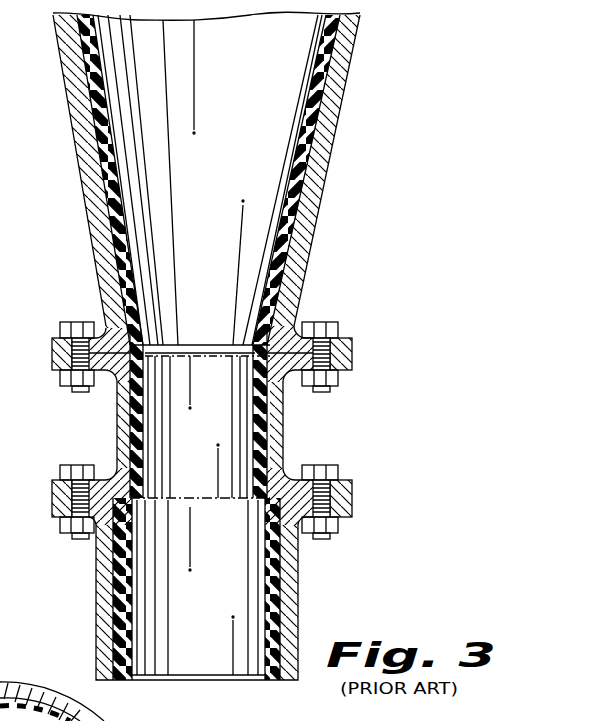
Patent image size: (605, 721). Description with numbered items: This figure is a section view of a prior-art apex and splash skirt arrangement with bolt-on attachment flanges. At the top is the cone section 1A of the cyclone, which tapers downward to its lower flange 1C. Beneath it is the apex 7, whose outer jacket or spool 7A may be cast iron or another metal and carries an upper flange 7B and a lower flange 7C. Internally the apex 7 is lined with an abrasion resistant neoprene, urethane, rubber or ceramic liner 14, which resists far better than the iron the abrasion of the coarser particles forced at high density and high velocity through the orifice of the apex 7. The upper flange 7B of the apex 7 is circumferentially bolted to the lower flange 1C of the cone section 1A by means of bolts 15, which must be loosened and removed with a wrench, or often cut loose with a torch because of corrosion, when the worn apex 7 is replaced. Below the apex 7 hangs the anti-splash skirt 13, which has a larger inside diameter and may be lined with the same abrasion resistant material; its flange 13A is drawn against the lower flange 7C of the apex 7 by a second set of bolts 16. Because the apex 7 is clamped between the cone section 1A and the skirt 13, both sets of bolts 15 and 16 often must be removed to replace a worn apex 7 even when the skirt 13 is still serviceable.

The cone section 1A is at (331, 148).
The lower flange of cone section 1C is at (356, 343).
The apex 7 is at (246, 407).
The outer jacket or spool 7A is at (285, 420).
The upper flange 7B is at (356, 364).
The lower flange 7C is at (352, 494).
The anti-splash skirt 13 is at (308, 596).
The flange of skirt 13A is at (352, 510).
The liner 14 is at (222, 363).
The bolts 15 is at (76, 322).
The bolts 16 is at (75, 466).